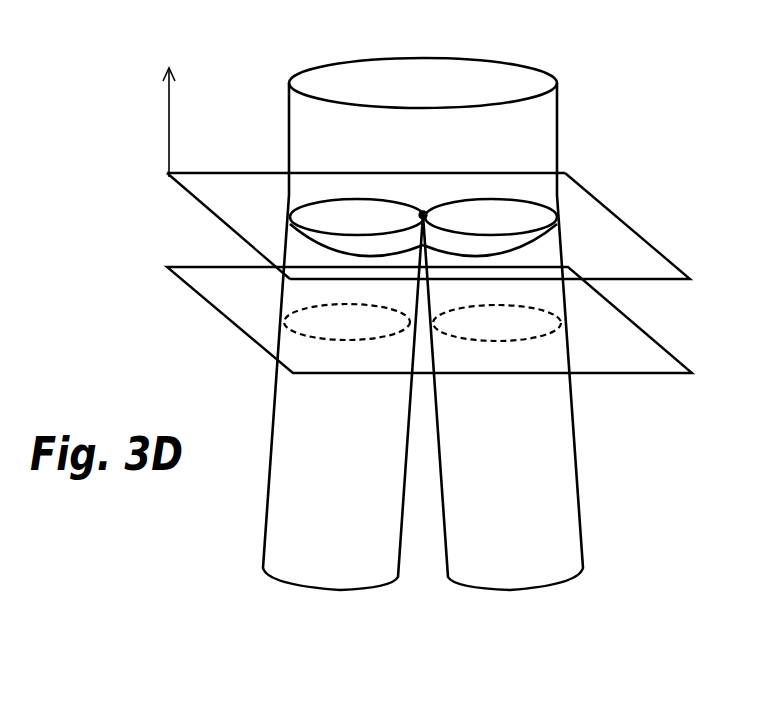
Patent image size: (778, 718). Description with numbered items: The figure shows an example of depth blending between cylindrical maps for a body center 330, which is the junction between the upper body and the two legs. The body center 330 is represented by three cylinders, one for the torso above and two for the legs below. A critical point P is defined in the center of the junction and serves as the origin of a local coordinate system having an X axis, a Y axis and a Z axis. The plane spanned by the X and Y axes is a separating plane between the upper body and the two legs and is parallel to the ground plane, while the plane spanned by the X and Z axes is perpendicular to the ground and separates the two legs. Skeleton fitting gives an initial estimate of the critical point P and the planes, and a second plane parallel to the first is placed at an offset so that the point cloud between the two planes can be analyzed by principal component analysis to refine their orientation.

The body center 330 is at (230, 66).
The critical point P is at (427, 201).
The X axis X is at (228, 226).
The Y axis Y is at (366, 153).
The Z axis Z is at (159, 122).